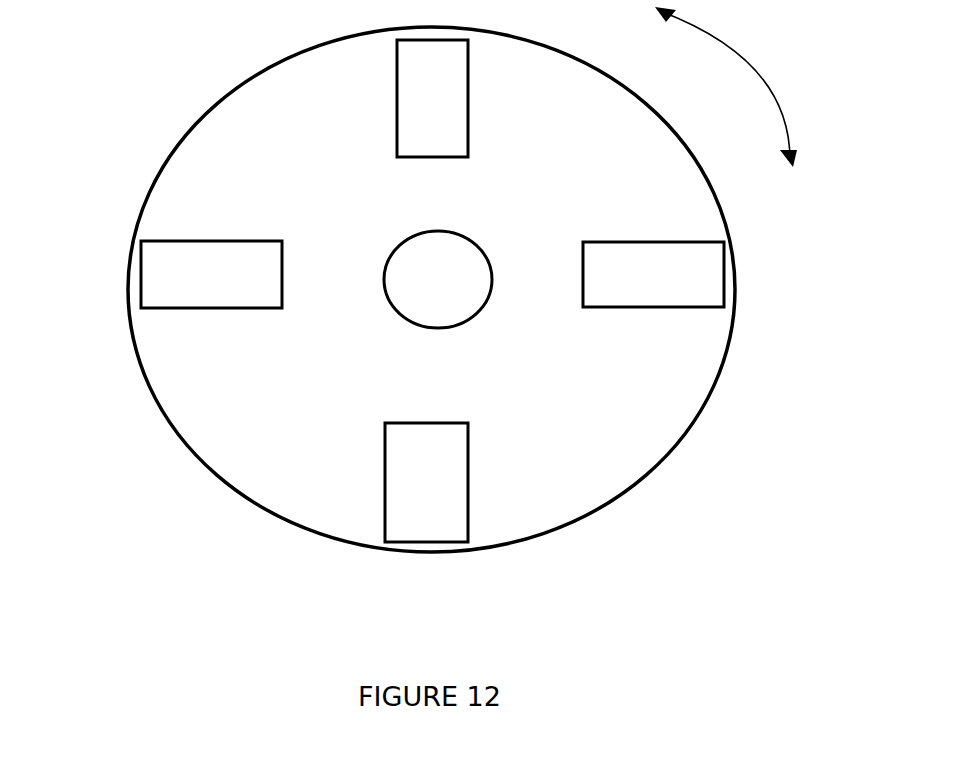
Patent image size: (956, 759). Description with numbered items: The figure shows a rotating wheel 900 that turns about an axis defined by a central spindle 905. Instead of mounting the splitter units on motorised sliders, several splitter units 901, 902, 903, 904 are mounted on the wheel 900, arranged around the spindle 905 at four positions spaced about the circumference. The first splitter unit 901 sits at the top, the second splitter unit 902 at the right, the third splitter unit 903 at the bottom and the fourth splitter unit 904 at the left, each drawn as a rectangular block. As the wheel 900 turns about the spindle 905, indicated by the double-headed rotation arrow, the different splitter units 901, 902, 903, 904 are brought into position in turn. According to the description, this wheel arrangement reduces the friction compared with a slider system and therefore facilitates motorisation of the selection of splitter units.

The wheel 900 is at (481, 289).
The splitter unit 901 is at (341, 94).
The splitter unit 902 is at (702, 313).
The splitter unit 903 is at (516, 499).
The splitter unit 904 is at (156, 239).
The spindle 905 is at (467, 272).